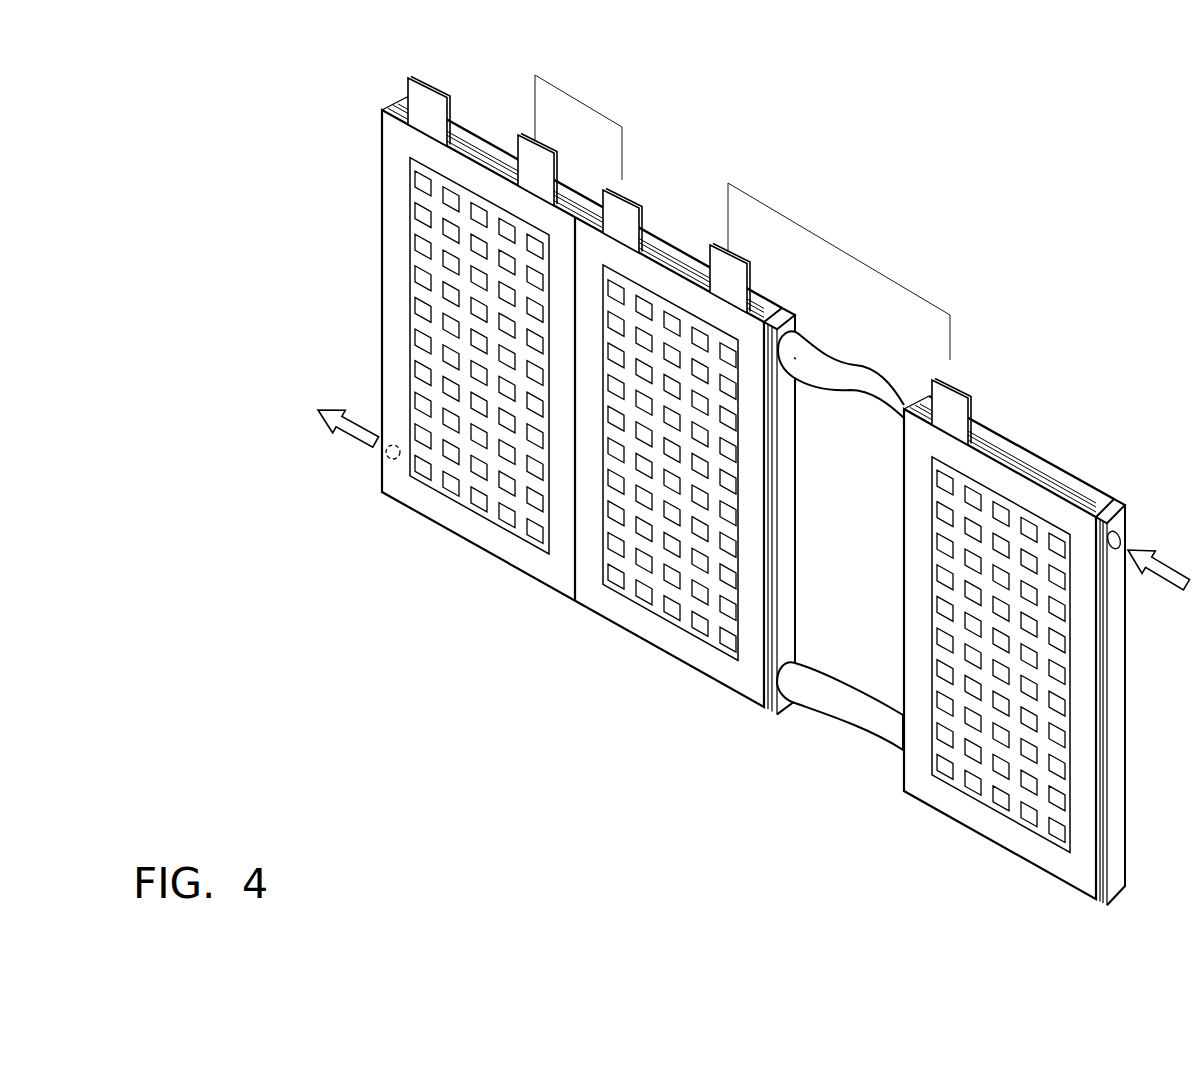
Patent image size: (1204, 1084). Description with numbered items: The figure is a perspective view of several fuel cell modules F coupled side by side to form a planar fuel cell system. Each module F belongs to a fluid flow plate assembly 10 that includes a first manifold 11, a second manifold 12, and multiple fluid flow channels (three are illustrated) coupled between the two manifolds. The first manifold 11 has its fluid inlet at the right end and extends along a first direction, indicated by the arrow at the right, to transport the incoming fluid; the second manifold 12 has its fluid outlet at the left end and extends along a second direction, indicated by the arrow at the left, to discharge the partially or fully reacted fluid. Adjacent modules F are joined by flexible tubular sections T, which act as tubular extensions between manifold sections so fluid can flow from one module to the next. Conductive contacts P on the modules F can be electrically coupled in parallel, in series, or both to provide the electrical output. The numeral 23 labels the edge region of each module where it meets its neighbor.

The fluid flow plate assembly 10 is at (470, 140).
The first manifold 11 is at (1118, 531).
The second manifold 12 is at (388, 459).
The sealing portion 23 is at (557, 224).
The conductive contacts P is at (543, 157).
The flexible tubular sections T is at (845, 368).
The fuel cell modules F is at (438, 527).